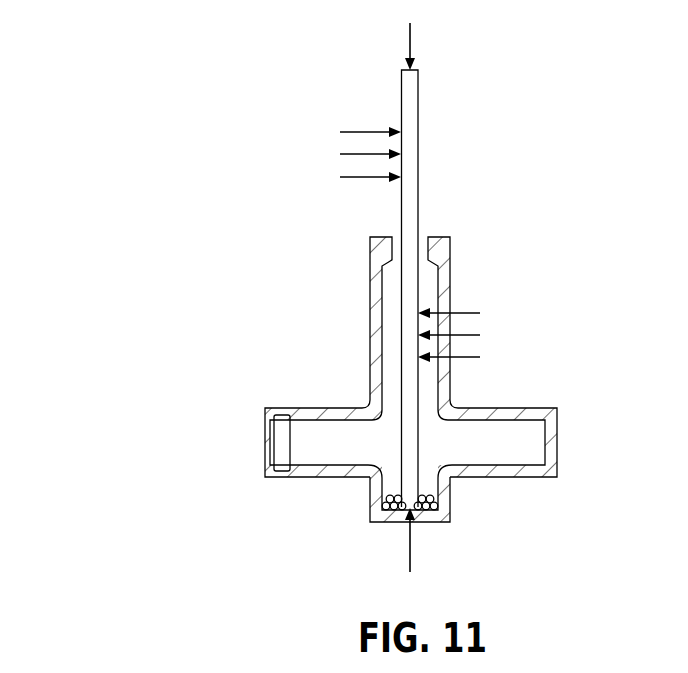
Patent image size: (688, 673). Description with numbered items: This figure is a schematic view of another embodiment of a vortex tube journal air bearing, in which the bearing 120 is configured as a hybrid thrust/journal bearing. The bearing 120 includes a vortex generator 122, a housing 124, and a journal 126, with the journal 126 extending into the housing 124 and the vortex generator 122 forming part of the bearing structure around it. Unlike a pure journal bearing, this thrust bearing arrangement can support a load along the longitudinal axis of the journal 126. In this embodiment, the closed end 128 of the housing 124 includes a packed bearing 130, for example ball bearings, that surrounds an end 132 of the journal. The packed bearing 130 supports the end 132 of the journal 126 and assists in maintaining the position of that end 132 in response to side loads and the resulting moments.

The bearing 120 is at (124, 94).
The vortex generator 122 is at (320, 408).
The housing 124 is at (370, 335).
The journal 126 is at (418, 190).
The closed end 128 is at (392, 522).
The packed bearing 130 is at (398, 498).
The end of the journal 132 is at (420, 495).